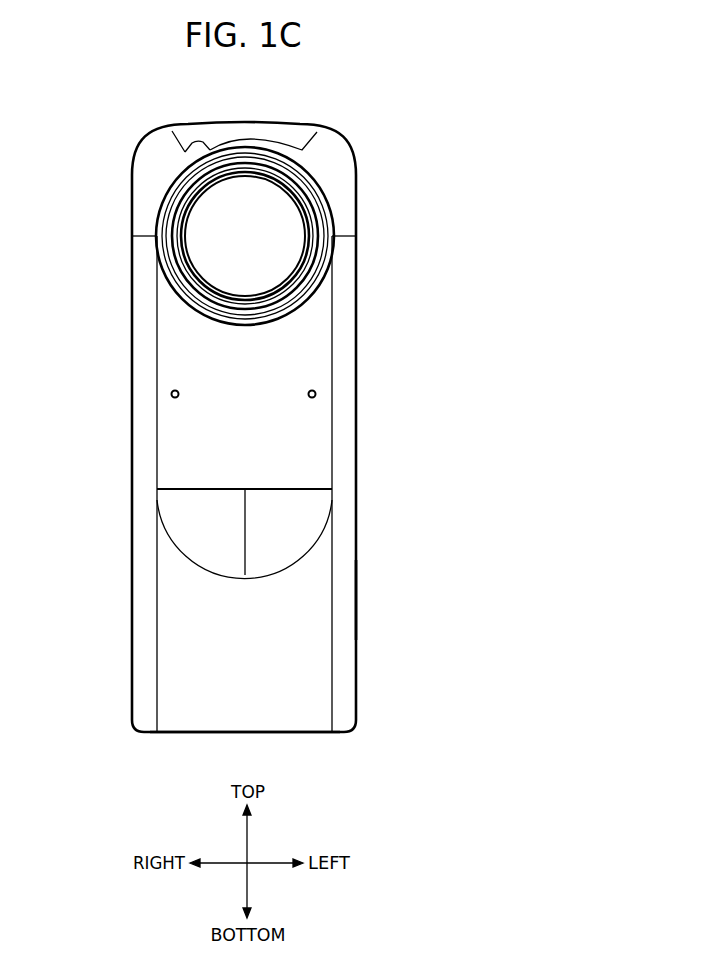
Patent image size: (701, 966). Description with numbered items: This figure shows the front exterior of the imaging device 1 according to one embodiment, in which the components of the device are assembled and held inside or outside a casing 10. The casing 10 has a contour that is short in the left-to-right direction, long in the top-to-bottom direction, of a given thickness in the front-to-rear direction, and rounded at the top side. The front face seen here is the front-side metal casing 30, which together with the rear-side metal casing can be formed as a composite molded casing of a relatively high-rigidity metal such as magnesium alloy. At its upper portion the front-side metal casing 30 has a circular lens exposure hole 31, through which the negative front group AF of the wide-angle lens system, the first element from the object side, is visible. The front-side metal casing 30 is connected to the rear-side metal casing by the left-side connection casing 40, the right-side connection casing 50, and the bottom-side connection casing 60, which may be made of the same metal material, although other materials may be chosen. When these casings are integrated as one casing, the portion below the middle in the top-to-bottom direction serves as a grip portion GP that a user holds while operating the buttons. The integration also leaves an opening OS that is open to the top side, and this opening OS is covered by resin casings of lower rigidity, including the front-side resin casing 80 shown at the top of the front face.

The imaging device 1 is at (243, 442).
The casing 10 is at (131, 173).
The front-side metal casing 30 is at (315, 382).
The lens exposure hole 31 is at (274, 178).
The left-side connection casing 40 is at (358, 499).
The right-side connection casing 50 is at (132, 498).
The bottom-side connection casing 60 is at (191, 733).
The front-side resin casing 80 is at (283, 132).
The opening OS is at (184, 152).
The negative front group AF is at (278, 255).
The grip portion GP is at (358, 598).